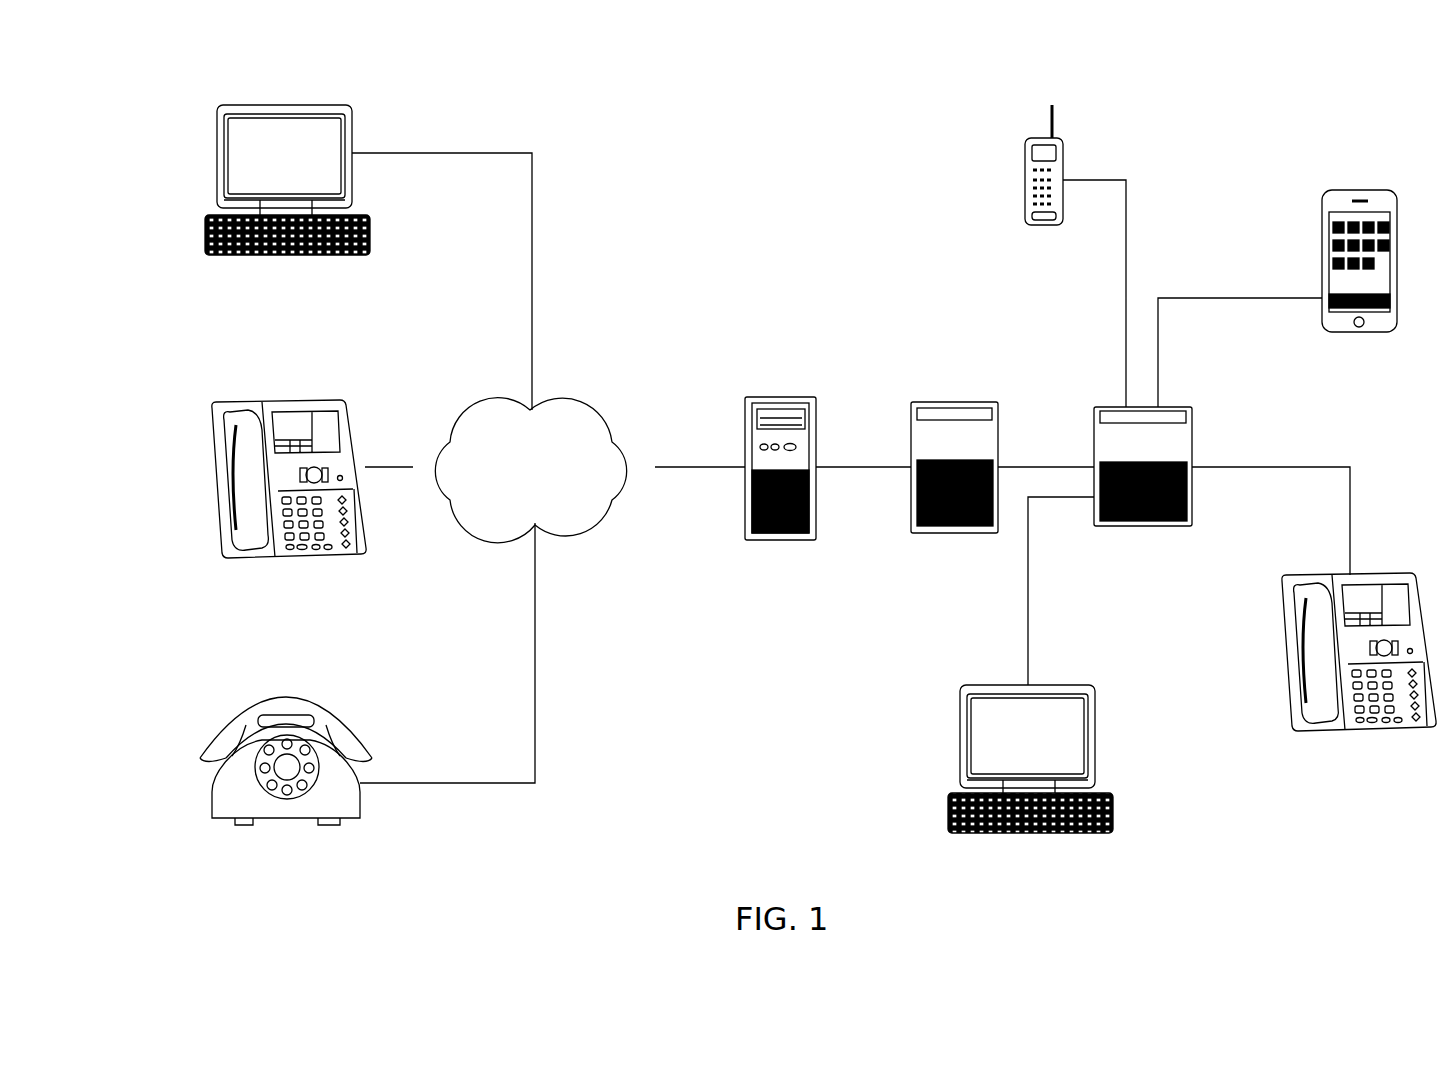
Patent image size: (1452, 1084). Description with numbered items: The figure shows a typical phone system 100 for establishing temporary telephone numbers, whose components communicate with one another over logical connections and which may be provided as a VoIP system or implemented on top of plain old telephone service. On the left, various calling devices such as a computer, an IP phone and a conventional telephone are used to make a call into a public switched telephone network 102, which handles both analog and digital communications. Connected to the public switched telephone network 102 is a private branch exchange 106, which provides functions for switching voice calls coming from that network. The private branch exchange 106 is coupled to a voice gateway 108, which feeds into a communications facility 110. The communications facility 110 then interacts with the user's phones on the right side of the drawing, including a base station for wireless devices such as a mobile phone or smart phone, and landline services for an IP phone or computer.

The phone system 100 is at (836, 145).
The public switched telephone network 102 is at (576, 397).
The private branch exchange 106 is at (781, 397).
The voice gateway 108 is at (952, 402).
The communications facility 110 is at (1142, 527).